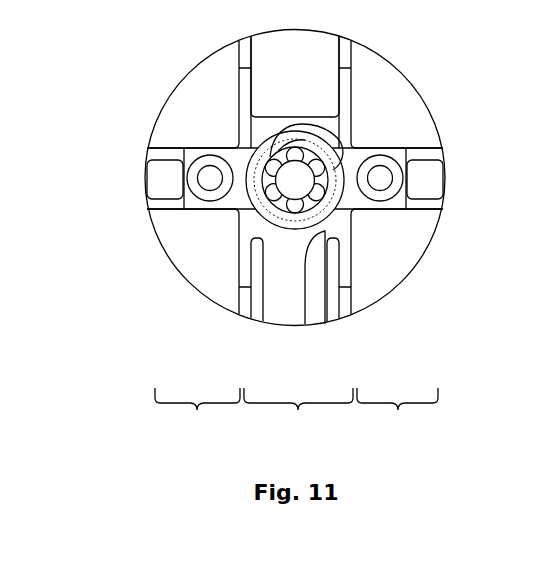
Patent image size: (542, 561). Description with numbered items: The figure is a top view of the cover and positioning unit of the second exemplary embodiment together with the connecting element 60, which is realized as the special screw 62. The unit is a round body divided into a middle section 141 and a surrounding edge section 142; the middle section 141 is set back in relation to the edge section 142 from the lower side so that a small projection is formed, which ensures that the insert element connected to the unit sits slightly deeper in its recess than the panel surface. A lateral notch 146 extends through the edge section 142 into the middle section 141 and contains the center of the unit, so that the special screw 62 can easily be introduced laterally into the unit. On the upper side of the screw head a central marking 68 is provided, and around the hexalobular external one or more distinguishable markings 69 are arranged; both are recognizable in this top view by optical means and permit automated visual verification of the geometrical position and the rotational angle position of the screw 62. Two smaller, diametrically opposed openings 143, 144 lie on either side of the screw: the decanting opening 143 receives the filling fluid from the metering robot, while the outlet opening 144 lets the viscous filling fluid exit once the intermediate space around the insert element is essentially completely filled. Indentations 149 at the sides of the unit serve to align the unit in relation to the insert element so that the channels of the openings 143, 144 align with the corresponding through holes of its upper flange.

The connecting element 60 is at (313, 212).
The special screw 62 is at (313, 212).
The central marking 68 is at (296, 181).
The markings 69 is at (313, 146).
The middle section 141 is at (298, 416).
The edge section 142 is at (296, 416).
The decanting opening 143 is at (384, 168).
The outlet opening 144 is at (206, 172).
The lateral notch 146 is at (303, 326).
The indentations 149 is at (165, 160).